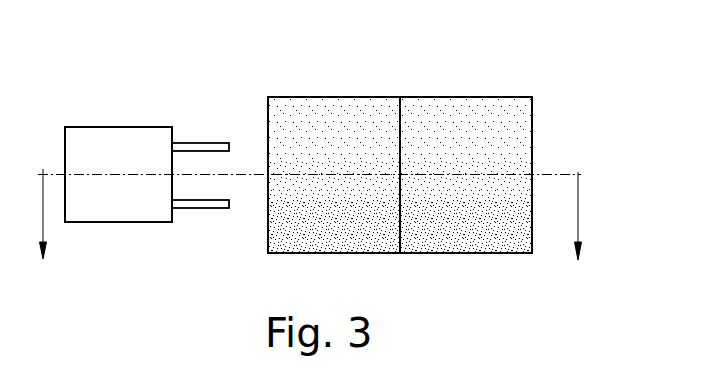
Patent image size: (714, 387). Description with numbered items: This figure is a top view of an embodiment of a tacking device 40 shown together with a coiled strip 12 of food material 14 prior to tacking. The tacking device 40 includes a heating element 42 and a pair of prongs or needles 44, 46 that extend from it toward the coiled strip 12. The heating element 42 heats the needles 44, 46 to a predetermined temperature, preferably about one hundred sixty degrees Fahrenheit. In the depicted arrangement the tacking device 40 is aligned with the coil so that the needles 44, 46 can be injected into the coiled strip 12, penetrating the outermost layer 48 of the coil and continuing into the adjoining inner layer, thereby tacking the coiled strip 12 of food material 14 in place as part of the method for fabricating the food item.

The coiled strip 12 is at (435, 106).
The food material 14 is at (427, 255).
The tacking device 40 is at (100, 252).
The heating element 42 is at (113, 140).
The needle 44 is at (222, 209).
The needle 46 is at (193, 143).
The outermost layer 48 is at (283, 255).